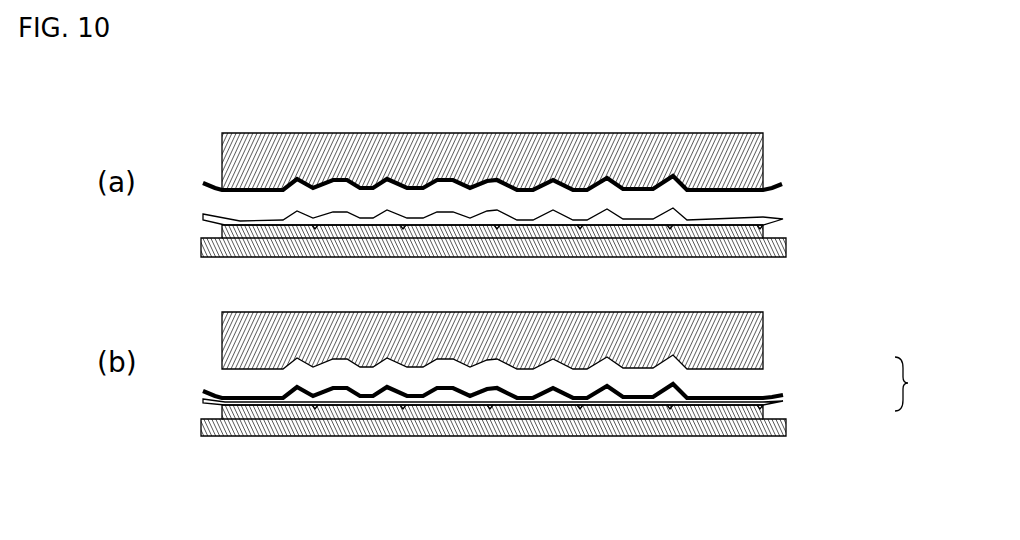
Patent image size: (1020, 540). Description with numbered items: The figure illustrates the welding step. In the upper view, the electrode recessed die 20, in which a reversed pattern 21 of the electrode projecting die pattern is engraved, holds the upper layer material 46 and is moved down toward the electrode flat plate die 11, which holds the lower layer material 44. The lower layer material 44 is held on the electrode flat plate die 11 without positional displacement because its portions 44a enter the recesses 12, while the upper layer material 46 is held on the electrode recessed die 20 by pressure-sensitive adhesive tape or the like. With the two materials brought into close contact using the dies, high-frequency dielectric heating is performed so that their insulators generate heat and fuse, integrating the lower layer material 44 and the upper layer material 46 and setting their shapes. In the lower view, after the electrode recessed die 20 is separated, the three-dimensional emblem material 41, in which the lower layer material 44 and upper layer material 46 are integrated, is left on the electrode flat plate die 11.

The electrode recessed die 20 is at (707, 155).
The reversed pattern 21 is at (500, 183).
The upper layer material 46 is at (782, 184).
The lower layer material 44 is at (783, 220).
The portions of the lower layer material 44a is at (497, 230).
The recesses 12 is at (495, 230).
The electrode flat plate die 11 is at (250, 240).
The three-dimensional emblem material 41 is at (916, 384).